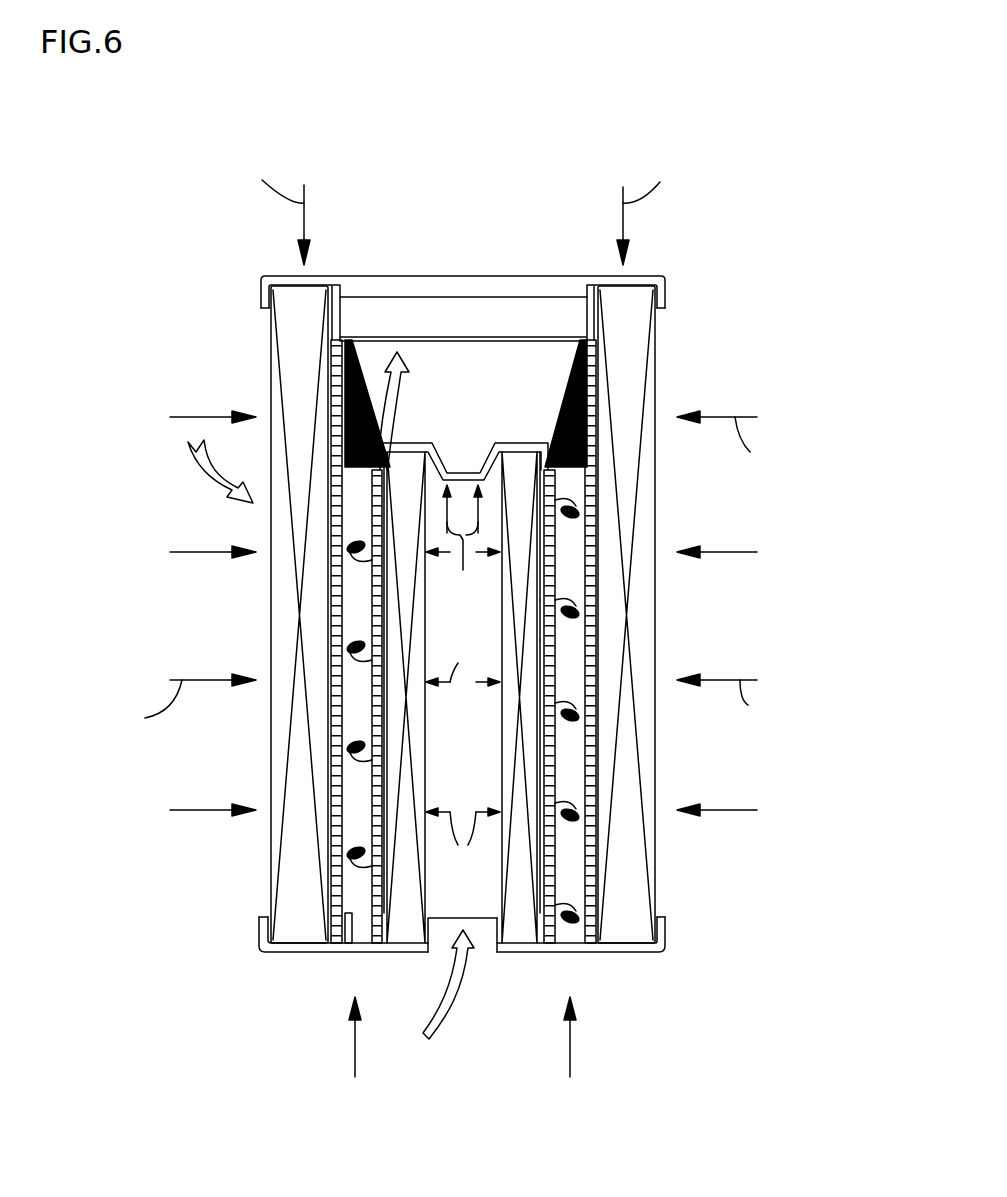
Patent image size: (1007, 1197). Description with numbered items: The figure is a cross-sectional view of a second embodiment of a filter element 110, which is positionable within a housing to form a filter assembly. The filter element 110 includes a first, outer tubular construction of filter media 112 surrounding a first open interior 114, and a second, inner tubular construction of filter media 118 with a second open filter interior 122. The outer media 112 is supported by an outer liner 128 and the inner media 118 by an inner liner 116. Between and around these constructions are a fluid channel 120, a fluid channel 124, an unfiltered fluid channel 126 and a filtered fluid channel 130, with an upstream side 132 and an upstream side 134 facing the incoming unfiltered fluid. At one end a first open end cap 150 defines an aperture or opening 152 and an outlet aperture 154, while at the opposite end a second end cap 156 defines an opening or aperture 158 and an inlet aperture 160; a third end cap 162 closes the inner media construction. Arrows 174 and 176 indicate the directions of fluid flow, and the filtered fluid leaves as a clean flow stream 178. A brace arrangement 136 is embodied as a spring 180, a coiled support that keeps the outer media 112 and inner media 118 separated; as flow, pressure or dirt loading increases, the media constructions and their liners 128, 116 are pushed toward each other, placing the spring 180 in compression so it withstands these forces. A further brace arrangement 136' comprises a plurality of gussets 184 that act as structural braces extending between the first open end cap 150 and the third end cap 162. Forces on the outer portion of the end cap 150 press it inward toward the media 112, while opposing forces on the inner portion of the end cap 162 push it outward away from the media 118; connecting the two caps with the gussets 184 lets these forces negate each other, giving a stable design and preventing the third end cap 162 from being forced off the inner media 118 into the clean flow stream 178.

The filter element 110 is at (700, 200).
The first, outer tubular construction of filter media 112 is at (272, 720).
The first open interior 114 is at (342, 888).
The inner liner 116 is at (332, 775).
The second, inner tubular construction of filter media 118 is at (530, 743).
The fluid channel 120 is at (590, 774).
The second open filter interior 122 is at (502, 648).
The fluid channel 124 is at (502, 615).
The unfiltered fluid channel 126 is at (502, 578).
The outer liner 128 is at (557, 862).
The filtered fluid channel 130 is at (340, 734).
The upstream side 132 is at (272, 588).
The upstream side 134 is at (425, 778).
The brace arrangement 136 is at (278, 706).
The brace arrangement 136' is at (463, 279).
The first open end cap 150 is at (647, 277).
The aperture or opening 152 is at (347, 340).
The outlet aperture 154 is at (582, 308).
The second end cap 156 is at (295, 953).
The opening or aperture 158 is at (488, 953).
The inlet aperture 160 is at (435, 953).
The third end cap 162 is at (500, 442).
The arrow 174 is at (207, 492).
The arrow 176 is at (450, 1022).
The clean flow stream 178 is at (402, 393).
The spring 180 is at (352, 847).
The gussets 184 is at (375, 435).